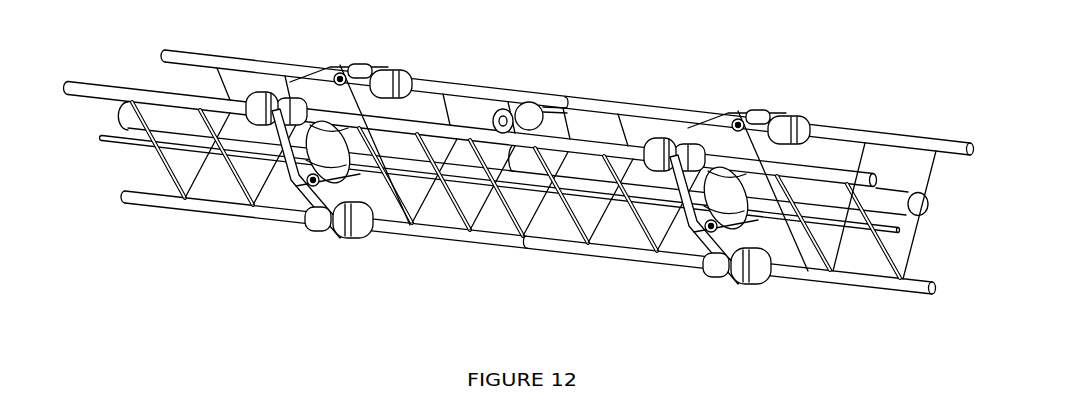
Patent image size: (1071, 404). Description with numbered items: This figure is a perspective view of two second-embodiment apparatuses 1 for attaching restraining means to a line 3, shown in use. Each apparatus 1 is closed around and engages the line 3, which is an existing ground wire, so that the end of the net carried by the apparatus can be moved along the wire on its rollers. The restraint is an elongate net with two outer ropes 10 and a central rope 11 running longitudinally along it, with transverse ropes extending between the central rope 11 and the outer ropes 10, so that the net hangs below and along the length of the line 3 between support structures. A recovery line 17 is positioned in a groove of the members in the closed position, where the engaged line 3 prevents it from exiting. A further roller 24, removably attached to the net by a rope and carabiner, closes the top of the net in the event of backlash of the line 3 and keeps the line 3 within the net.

The apparatus for attaching restraining means to a line 1 is at (422, 47).
The line 3 is at (163, 110).
The outer ropes 10 is at (104, 86).
The central rope 11 is at (545, 250).
The recovery line 17 is at (897, 232).
The roller 24 is at (532, 108).